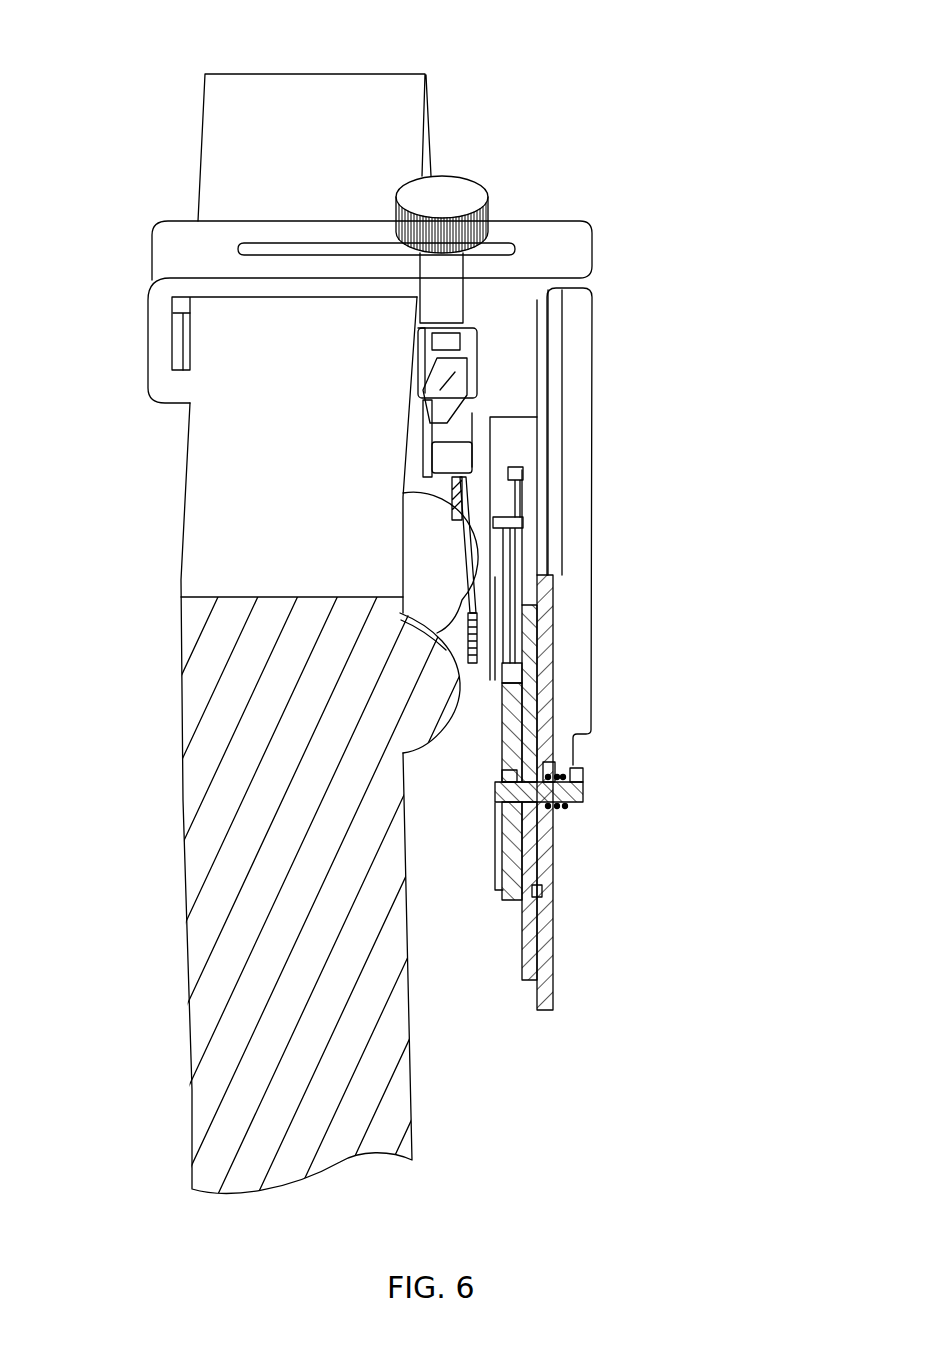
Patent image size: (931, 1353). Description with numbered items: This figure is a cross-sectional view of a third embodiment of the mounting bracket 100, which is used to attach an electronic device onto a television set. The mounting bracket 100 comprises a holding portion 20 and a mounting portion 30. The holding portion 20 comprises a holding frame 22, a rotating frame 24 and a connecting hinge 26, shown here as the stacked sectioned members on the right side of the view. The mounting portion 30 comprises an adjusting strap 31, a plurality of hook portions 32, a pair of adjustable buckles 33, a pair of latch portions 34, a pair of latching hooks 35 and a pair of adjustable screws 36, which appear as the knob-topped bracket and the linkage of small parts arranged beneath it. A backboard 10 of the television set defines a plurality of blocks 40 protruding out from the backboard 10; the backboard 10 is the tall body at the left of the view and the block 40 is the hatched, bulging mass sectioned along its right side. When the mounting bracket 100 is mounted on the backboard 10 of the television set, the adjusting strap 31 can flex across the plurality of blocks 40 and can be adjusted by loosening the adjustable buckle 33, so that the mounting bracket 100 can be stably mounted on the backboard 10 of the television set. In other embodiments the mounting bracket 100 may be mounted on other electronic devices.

The mounting bracket 100 is at (456, 20).
The backboard 10 is at (373, 140).
The holding portion 20 is at (611, 650).
The holding frame 22 is at (553, 672).
The rotating frame 24 is at (512, 765).
The connecting hinge 26 is at (581, 764).
The mounting portion 30 is at (484, 479).
The adjusting strap 31 is at (595, 570).
The hook portion 32 is at (447, 462).
The adjustable buckle 33 is at (437, 392).
The latch portion 34 is at (442, 342).
The latching hook 35 is at (565, 255).
The adjustable screw 36 is at (460, 195).
The block 40 is at (435, 672).